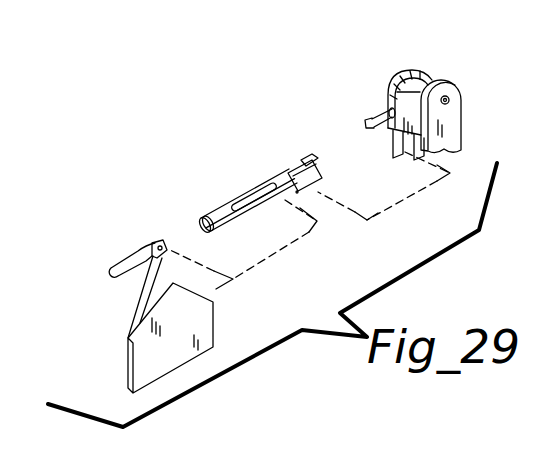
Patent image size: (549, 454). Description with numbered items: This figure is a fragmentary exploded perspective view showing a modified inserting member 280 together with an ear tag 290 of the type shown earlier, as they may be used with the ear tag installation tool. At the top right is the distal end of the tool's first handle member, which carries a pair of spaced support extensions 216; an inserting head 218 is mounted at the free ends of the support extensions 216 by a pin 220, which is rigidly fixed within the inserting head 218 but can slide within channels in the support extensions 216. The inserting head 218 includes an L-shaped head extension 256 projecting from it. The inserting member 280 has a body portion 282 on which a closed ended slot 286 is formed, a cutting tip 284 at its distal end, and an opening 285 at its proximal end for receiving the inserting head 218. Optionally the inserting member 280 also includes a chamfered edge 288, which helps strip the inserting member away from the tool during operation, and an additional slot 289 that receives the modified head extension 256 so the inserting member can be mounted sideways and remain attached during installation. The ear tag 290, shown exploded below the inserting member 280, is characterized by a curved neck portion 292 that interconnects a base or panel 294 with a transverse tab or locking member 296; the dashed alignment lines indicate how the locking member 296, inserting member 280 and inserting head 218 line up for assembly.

The support extensions 216 is at (434, 83).
The inserting head 218 is at (410, 97).
The pin 220 is at (449, 99).
The L-shaped head extension 256 is at (377, 118).
The modified inserting member 280 is at (254, 151).
The body portion 282 is at (229, 197).
The cutting tip 284 is at (204, 220).
The opening 285 is at (342, 182).
The closed ended slot 286 is at (244, 194).
The chamfered edge 288 is at (335, 114).
The additional slot 289 is at (296, 192).
The ear tag 290 is at (154, 302).
The curved neck portion 292 is at (143, 290).
The panel 294 is at (200, 330).
The locking member 296 is at (118, 267).